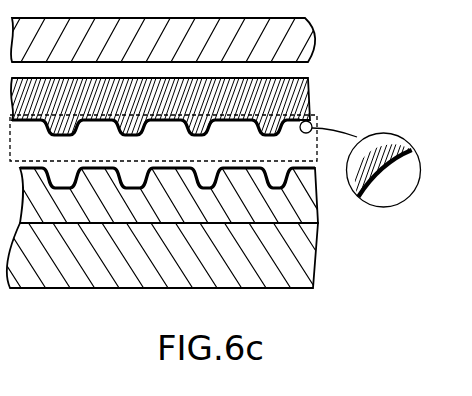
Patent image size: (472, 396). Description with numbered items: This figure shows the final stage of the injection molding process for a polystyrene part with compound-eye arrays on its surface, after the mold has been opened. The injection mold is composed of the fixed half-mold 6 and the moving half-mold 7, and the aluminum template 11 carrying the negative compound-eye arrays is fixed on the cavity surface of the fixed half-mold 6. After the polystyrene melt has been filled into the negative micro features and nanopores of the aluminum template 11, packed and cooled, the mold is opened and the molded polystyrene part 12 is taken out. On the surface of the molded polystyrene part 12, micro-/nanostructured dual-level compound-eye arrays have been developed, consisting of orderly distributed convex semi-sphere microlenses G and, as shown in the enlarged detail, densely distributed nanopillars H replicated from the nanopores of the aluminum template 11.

The moving half-mold 7 is at (306, 33).
The molded polystyrene part 12 is at (306, 97).
The aluminum template 11 is at (298, 212).
The fixed half-mold 6 is at (298, 267).
The convex semi-sphere microlens G is at (163, 138).
The nanopillars H is at (364, 164).